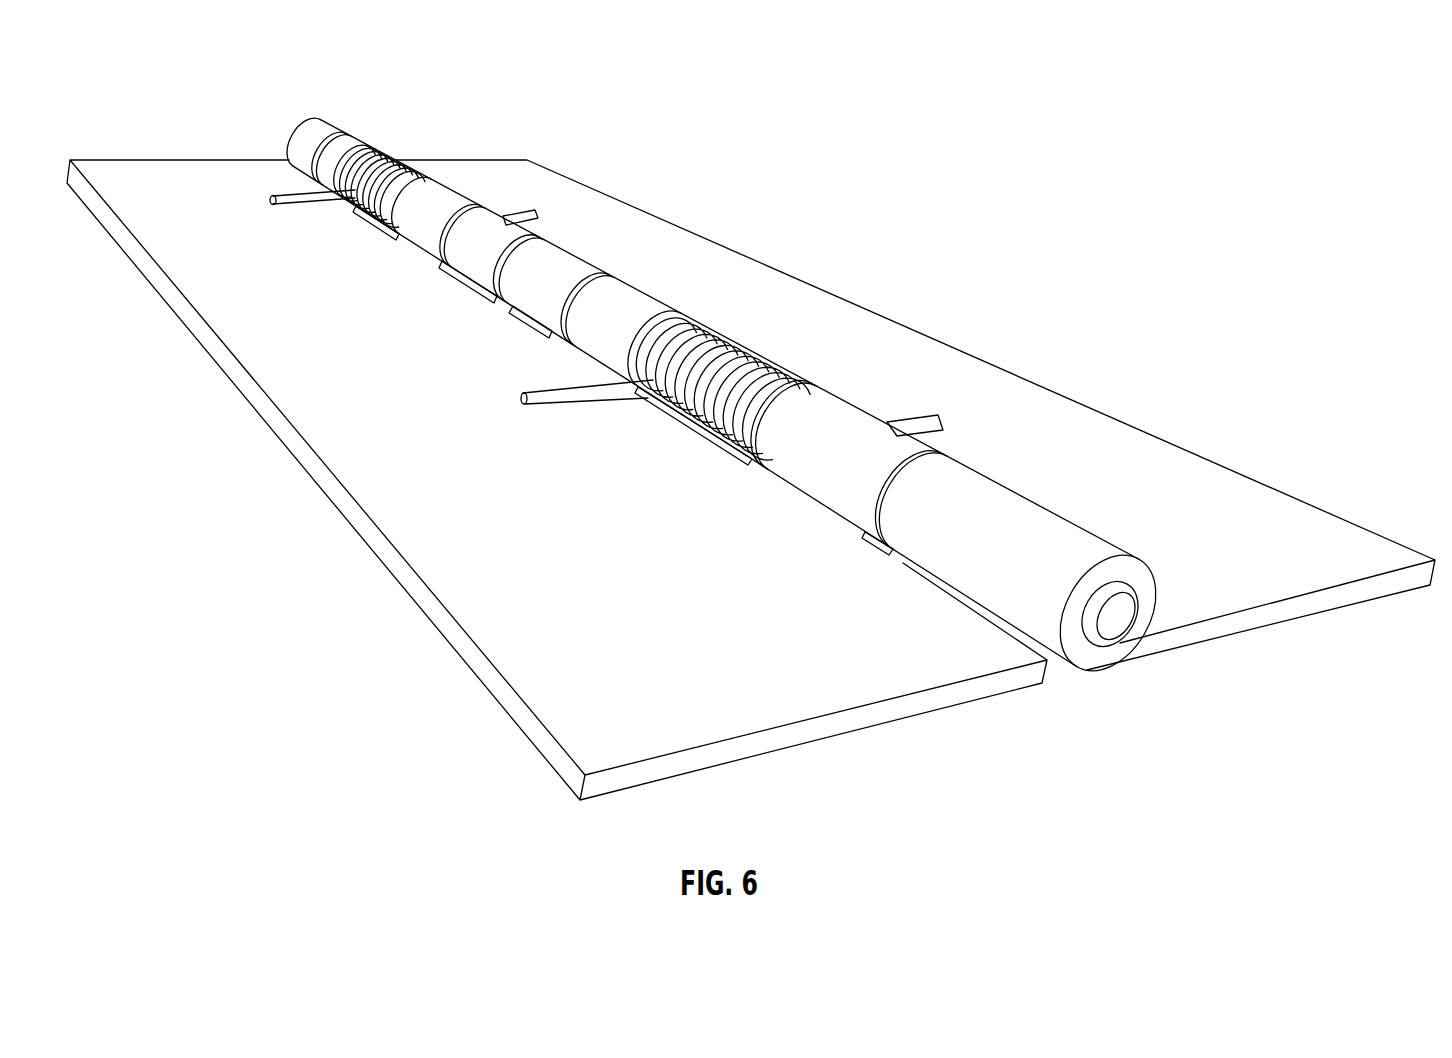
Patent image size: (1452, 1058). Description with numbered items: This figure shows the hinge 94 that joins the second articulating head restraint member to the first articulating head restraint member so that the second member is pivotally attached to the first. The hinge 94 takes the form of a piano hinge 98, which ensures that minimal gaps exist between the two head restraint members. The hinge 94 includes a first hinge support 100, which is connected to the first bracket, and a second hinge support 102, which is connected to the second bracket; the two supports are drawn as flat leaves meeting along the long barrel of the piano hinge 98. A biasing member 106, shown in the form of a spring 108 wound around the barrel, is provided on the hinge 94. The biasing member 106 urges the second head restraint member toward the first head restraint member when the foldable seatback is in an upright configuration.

The hinge 94 is at (150, 82).
The piano hinge 98 is at (633, 265).
The first hinge support 100 is at (908, 375).
The second hinge support 102 is at (758, 688).
The biasing member 106 is at (694, 389).
The spring 108 is at (706, 345).